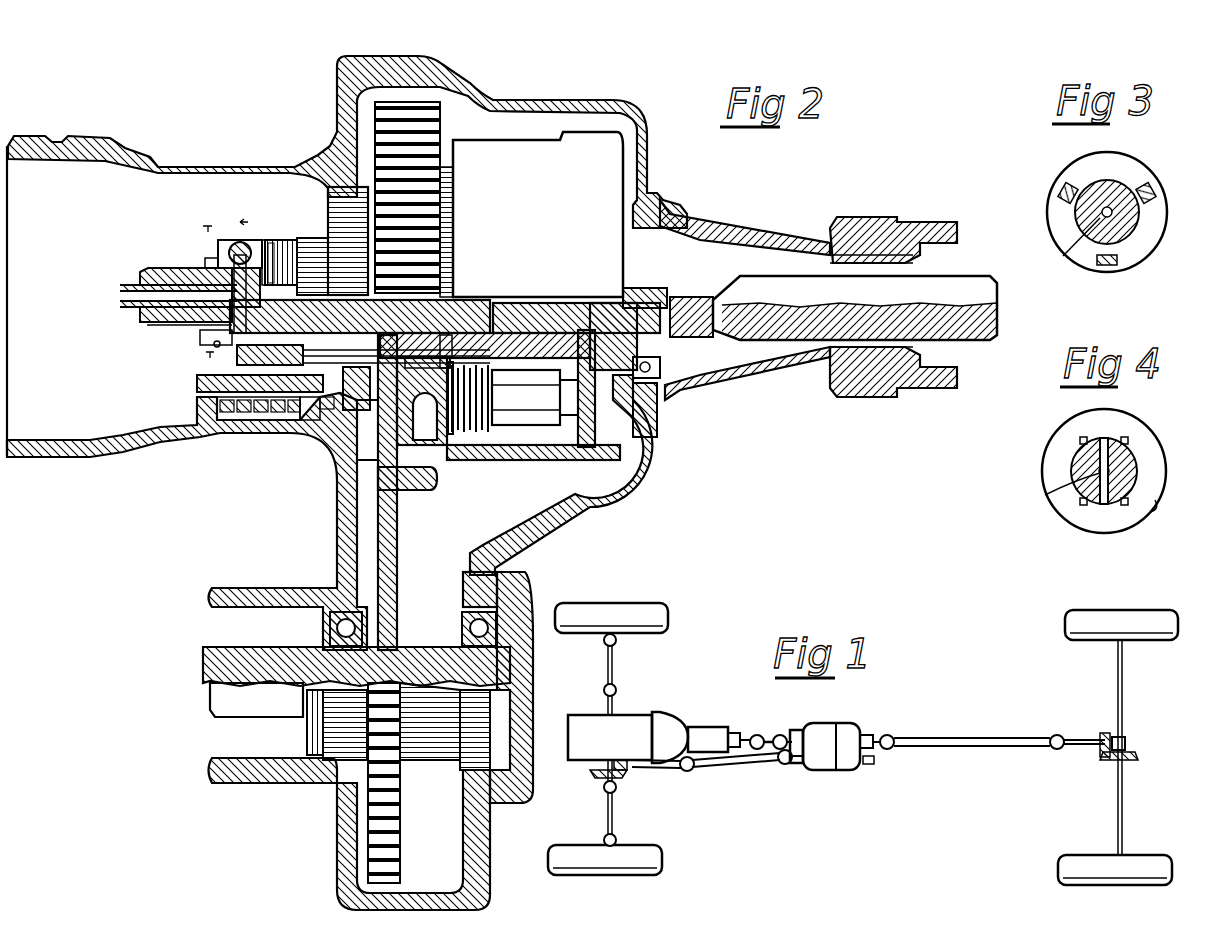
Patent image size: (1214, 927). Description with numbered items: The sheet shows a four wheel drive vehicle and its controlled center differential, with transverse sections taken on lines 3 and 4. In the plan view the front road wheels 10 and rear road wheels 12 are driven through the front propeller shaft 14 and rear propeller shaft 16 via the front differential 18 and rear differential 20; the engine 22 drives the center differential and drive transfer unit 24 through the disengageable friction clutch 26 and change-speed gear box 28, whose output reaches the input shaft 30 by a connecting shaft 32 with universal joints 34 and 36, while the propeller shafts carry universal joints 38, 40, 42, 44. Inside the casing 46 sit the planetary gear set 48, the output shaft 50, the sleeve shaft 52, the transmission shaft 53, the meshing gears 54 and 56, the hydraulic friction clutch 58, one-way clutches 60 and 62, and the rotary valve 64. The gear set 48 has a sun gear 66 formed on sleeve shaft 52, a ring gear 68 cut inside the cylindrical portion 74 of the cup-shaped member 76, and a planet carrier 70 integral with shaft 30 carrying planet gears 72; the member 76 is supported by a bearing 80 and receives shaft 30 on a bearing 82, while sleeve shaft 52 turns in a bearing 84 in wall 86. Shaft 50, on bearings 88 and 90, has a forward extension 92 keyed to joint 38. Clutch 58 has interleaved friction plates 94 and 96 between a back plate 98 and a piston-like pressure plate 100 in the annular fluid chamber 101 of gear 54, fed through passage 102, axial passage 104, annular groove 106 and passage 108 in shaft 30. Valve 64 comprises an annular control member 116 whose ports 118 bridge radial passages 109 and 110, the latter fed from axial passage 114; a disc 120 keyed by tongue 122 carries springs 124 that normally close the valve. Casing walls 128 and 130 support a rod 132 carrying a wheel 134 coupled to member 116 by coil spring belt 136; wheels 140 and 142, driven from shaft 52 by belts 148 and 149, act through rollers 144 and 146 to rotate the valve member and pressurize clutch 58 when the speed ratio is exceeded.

In FIG. 1, the front road wheels 10 is at (600, 604).
In FIG. 1, the rear road wheels 12 is at (1065, 622).
In FIG. 1, the front propeller shaft 14 is at (735, 767).
In FIG. 1, the rear propeller shaft 16 is at (968, 738).
In FIG. 1, the front differential 18 is at (592, 770).
In FIG. 1, the rear differential 20 is at (1128, 742).
In FIG. 1, the engine 22 is at (627, 715).
In FIG. 2, the center differential and drive transfer unit 24 is at (660, 99).
In FIG. 1, the center differential and drive transfer unit 24 is at (848, 721).
In FIG. 1, the disengageable friction clutch 26 is at (668, 712).
In FIG. 1, the change-speed gear box 28 is at (700, 727).
In FIG. 2, the first transmission input shaft 30 is at (140, 285).
In FIG. 3, the first transmission input shaft 30 is at (1140, 212).
In FIG. 4, the first transmission input shaft 30 is at (1136, 470).
In FIG. 1, the connecting shaft 32 is at (771, 740).
In FIG. 1, the universal joint 34 is at (752, 736).
In FIG. 1, the universal joint 36 is at (787, 738).
In FIG. 1, the universal joint 38 is at (785, 765).
In FIG. 1, the universal joint 40 is at (685, 771).
In FIG. 1, the universal joint 42 is at (890, 735).
In FIG. 1, the universal joint 44 is at (1058, 735).
In FIG. 2, the casing 46 is at (485, 77).
In FIG. 2, the center differential gear set 48 is at (557, 500).
In FIG. 2, the second transmission output shaft 50 is at (433, 648).
In FIG. 2, the third transmission sleeve shaft 52 is at (563, 350).
In FIG. 2, the fourth transmission shaft 53 is at (808, 299).
In FIG. 2, the gear 54 is at (420, 493).
In FIG. 2, the gear 56 is at (397, 557).
In FIG. 2, the hydraulically operated friction clutch 58 is at (494, 442).
In FIG. 2, the overrunning clutch device 60 is at (243, 423).
In FIG. 2, the overrunning clutch device 62 is at (305, 420).
In FIG. 2, the rotary valve 64 is at (257, 240).
In FIG. 4, the rotary valve 64 is at (1160, 425).
In FIG. 2, the sun gear 66 is at (520, 362).
In FIG. 2, the ring gear 68 is at (590, 497).
In FIG. 2, the planet carrier 70 is at (640, 420).
In FIG. 2, the planet gear 72 is at (540, 430).
In FIG. 2, the cylindrical portion 74 is at (620, 470).
In FIG. 2, the cup-shaped member 76 is at (509, 138).
In FIG. 2, the bearing 80 is at (672, 367).
In FIG. 2, the bearing 82 is at (637, 327).
In FIG. 2, the bearing 84 is at (350, 338).
In FIG. 2, the wall 86 is at (337, 533).
In FIG. 2, the bearing 88 is at (333, 625).
In FIG. 2, the bearing 90 is at (470, 612).
In FIG. 2, the forward extension 92 is at (242, 660).
In FIG. 2, the friction plates 94 is at (420, 435).
In FIG. 2, the friction plates 96 is at (490, 365).
In FIG. 2, the back plate 98 is at (498, 437).
In FIG. 2, the pressure plate 100 is at (440, 363).
In FIG. 2, the annular fluid chamber 101 is at (375, 460).
In FIG. 2, the fluid passage 102 is at (408, 358).
In FIG. 2, the axial passage 104 is at (395, 335).
In FIG. 2, the annular groove 106 is at (352, 338).
In FIG. 2, the radial and axial passage 108 is at (315, 268).
In FIG. 4, the radial and axial passage 108 is at (1053, 489).
In FIG. 2, the radial passage 109 is at (268, 240).
In FIG. 4, the radial passage 109 is at (1110, 454).
In FIG. 2, the radial passage 110 is at (148, 313).
In FIG. 2, the axial passage 114 is at (160, 270).
In FIG. 3, the axial passage 114 is at (1066, 246).
In FIG. 2, the annular control member 116 is at (228, 240).
In FIG. 4, the annular control member 116 is at (1158, 512).
In FIG. 2, the ports 118 is at (228, 256).
In FIG. 4, the ports 118 is at (1080, 440).
In FIG. 2, the annular plate 120 is at (215, 245).
In FIG. 3, the annular plate 120 is at (1135, 166).
In FIG. 2, the tongue 122 is at (200, 335).
In FIG. 2, the springs 124 is at (214, 345).
In FIG. 3, the springs 124 is at (1064, 186).
In FIG. 2, the wall 128 is at (197, 405).
In FIG. 2, the wall 130 is at (352, 412).
In FIG. 2, the rod 132 is at (197, 383).
In FIG. 2, the wheel 134 is at (222, 420).
In FIG. 2, the coil spring belt 136 is at (240, 420).
In FIG. 2, the wheel 140 is at (272, 420).
In FIG. 2, the wheel 142 is at (318, 418).
In FIG. 2, the rollers 144 is at (258, 420).
In FIG. 2, the rollers 146 is at (288, 420).
In FIG. 2, the coil spring belt 148 is at (283, 252).
In FIG. 2, the coil spring belt 149 is at (292, 240).
In FIG. 2, the section line 3— 3 is at (204, 287).
In FIG. 2, the section line 4— 4 is at (250, 219).